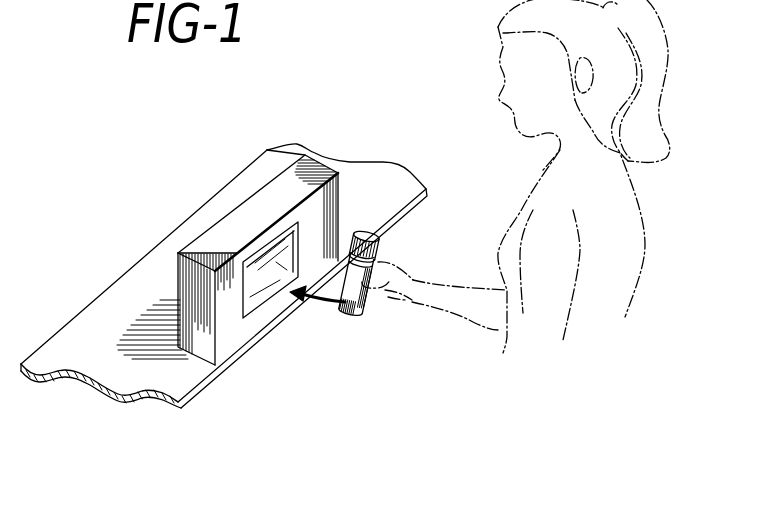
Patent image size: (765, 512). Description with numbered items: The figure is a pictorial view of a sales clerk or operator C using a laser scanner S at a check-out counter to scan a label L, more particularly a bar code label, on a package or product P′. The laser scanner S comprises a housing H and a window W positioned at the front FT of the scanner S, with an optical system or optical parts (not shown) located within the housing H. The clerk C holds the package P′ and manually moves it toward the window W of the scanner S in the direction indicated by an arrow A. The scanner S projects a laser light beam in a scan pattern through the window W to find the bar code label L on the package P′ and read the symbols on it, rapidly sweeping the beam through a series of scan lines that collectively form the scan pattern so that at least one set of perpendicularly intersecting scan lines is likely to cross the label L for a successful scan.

The laser scanner S is at (201, 231).
The housing H is at (316, 168).
The window W is at (264, 290).
The front FT is at (231, 338).
The arrow A is at (338, 306).
The package P′ is at (386, 312).
The label L is at (372, 318).
The clerk C is at (628, 257).